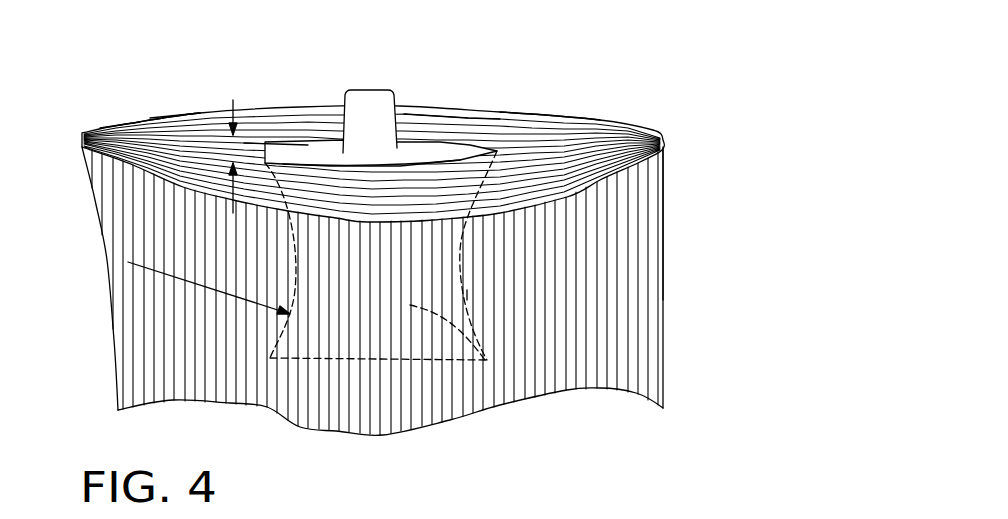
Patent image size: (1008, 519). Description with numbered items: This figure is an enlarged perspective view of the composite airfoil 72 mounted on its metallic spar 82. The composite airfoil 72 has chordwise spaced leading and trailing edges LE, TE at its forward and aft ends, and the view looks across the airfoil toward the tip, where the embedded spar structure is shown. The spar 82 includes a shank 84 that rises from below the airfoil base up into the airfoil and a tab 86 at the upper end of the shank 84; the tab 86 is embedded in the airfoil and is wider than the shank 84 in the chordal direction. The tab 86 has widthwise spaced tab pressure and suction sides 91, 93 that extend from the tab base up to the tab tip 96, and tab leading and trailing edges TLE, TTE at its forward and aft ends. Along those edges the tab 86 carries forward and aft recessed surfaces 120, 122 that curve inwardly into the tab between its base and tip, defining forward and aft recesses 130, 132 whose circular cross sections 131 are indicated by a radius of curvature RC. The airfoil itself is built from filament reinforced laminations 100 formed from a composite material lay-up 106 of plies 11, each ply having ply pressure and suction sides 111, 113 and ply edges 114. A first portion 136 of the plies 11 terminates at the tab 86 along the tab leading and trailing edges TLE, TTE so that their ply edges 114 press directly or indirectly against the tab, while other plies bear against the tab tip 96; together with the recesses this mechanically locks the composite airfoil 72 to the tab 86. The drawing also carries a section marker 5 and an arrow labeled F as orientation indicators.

The filament reinforced composite plies 11 is at (660, 160).
The composite airfoil 72 is at (663, 240).
The spar 82 is at (336, 128).
The shank 84 is at (395, 122).
The tab 86 is at (477, 145).
The tab pressure side 91 is at (487, 365).
The tab suction side 93 is at (452, 137).
The tab tip 96 is at (313, 360).
The filament reinforced laminations 100 is at (656, 125).
The composite material lay-up 106 is at (604, 74).
The ply pressure side 111 is at (125, 133).
The ply suction side 113 is at (163, 137).
The ply edges 114 is at (133, 137).
The forward recessed surface 120 is at (293, 240).
The aft recessed surface 122 is at (462, 250).
The forward recess 130 is at (287, 290).
The circular cross sections 131 is at (277, 213).
The aft recess 132 is at (467, 297).
The first portion of the plies 136 is at (249, 136).
The section line 5- 5 is at (447, 122).
The radial direction F is at (367, 107).
The airfoil leading edge LE is at (97, 207).
The airfoil trailing edge TE is at (663, 338).
The tab leading edge TLE is at (277, 335).
The tab trailing edge TTE is at (493, 322).
The radius of curvature RC is at (200, 282).